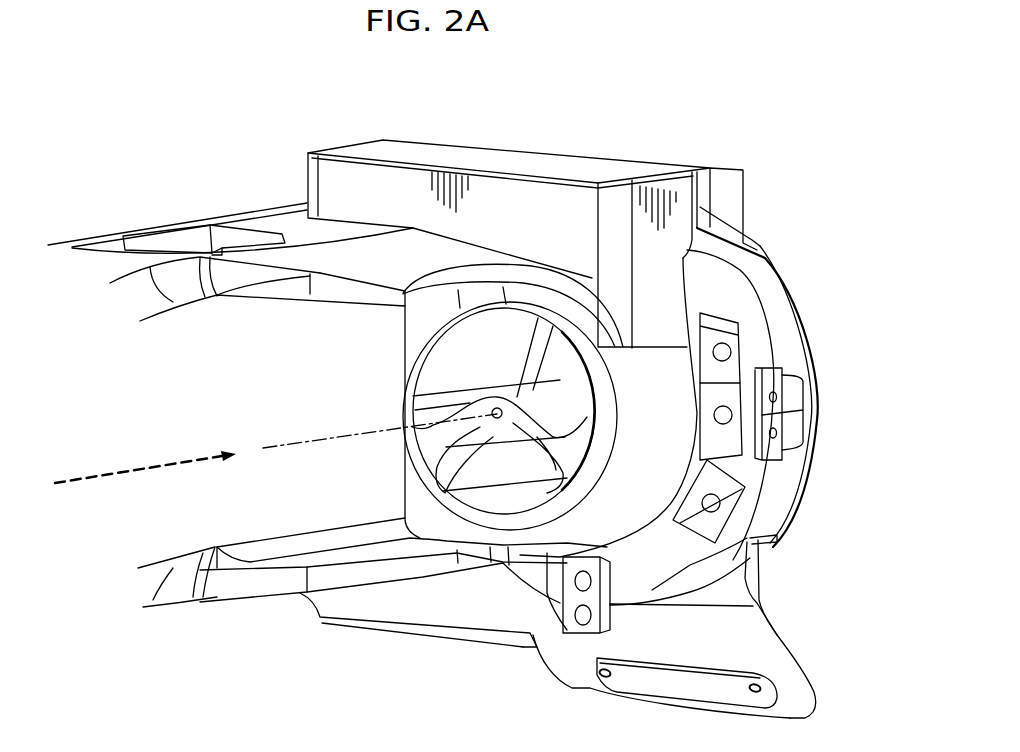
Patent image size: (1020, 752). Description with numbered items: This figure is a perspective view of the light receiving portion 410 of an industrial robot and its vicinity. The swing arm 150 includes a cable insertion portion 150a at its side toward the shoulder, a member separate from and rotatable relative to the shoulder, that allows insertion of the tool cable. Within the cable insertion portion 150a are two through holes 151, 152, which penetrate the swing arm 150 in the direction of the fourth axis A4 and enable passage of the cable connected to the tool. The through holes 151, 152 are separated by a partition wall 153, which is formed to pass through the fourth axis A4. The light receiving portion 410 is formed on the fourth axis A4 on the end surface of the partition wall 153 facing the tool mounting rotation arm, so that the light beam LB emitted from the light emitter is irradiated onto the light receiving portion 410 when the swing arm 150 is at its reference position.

The swing arm 150 is at (213, 206).
The cable insertion portion 150a is at (635, 498).
The through hole 151 is at (505, 342).
The through hole 152 is at (463, 468).
The partition wall 153 is at (535, 437).
The light receiving portion 410 is at (497, 420).
The fourth axis A4 is at (325, 438).
The light beam LB is at (131, 467).